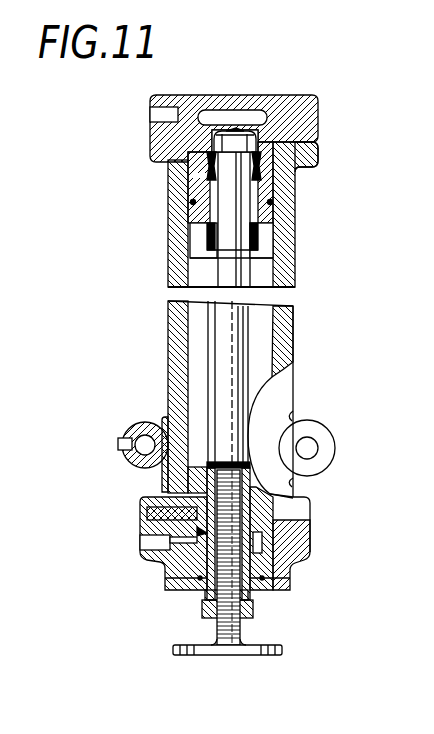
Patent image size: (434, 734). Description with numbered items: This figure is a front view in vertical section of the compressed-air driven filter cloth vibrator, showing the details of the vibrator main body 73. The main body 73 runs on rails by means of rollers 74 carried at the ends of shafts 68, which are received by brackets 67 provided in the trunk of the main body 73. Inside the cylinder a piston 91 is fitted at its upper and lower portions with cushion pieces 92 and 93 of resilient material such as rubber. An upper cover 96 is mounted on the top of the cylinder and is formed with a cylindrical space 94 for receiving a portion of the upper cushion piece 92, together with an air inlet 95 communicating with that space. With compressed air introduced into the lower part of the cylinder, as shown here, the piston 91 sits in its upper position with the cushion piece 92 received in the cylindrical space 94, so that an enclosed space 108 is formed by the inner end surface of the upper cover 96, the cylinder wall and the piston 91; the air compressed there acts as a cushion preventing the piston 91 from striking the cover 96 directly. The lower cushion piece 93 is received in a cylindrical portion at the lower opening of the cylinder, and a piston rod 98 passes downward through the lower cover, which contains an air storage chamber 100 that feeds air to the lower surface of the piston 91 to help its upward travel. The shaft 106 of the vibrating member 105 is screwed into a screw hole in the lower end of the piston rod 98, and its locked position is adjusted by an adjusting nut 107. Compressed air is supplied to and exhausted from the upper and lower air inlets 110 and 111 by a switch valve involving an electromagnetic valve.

The brackets 67 is at (122, 466).
The shafts 68 is at (145, 434).
The main body of the vibrator 73 is at (298, 251).
The rollers 74 is at (129, 421).
The piston 91 is at (198, 214).
The cushion piece 92 is at (200, 170).
The lower cushion piece 93 is at (206, 244).
The cylindrical space 94 is at (212, 131).
The air inlet 95 is at (240, 112).
The upper cover 96 is at (287, 101).
The piston rod 98 is at (272, 334).
The air storage chamber 100 is at (200, 533).
The vibrating member 105 is at (283, 653).
The shaft of the vibrating member 106 is at (290, 581).
The adjusting nut 107 is at (256, 612).
The enclosed space 108 is at (281, 176).
The upper air inlet 110 is at (150, 112).
The lower air inlet 111 is at (150, 540).